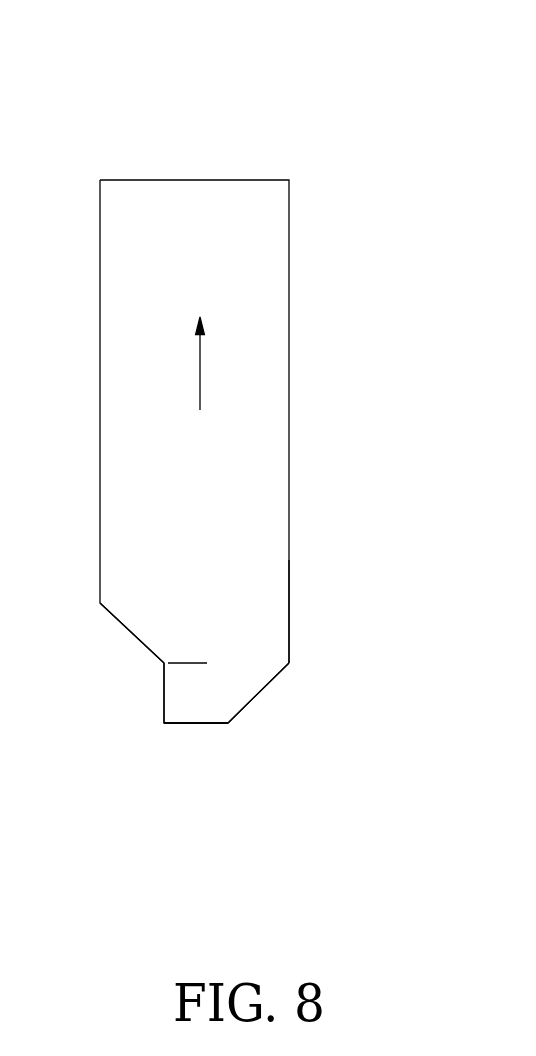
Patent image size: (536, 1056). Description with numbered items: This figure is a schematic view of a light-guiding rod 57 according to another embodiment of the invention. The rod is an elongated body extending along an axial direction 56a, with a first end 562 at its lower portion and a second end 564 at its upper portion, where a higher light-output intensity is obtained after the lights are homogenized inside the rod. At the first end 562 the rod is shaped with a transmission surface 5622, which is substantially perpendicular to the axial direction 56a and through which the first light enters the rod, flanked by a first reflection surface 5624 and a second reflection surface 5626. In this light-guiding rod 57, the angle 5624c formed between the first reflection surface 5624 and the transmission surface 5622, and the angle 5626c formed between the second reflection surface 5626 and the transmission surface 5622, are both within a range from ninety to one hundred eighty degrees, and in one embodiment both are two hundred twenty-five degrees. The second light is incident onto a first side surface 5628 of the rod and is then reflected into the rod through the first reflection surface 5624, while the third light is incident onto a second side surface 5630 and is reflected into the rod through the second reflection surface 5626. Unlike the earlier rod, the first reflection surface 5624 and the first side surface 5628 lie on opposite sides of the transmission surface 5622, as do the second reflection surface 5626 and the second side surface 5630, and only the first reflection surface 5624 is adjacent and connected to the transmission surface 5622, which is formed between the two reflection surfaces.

The light-guiding rod 57 is at (373, 112).
The second end 564 is at (202, 207).
The first end 562 is at (212, 560).
The axial direction 56a is at (203, 372).
The second side surface 5630 is at (290, 610).
The second reflection surface 5626 is at (123, 627).
The angle 5626c is at (195, 661).
The first side surface 5628 is at (162, 695).
The transmission surface 5622 is at (200, 724).
The angle 5624c is at (245, 700).
The first reflection surface 5624 is at (258, 697).